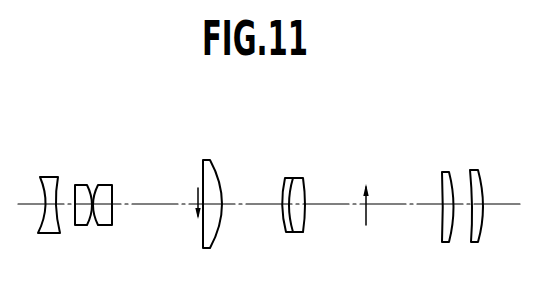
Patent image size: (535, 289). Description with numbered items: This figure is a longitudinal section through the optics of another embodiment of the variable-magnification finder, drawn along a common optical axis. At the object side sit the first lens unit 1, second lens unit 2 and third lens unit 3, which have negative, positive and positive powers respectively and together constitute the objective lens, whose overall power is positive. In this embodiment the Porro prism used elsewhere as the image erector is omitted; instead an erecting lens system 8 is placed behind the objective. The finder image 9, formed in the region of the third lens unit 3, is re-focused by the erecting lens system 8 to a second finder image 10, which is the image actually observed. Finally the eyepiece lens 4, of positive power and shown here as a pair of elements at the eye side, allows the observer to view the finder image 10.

The first lens unit 1 is at (27, 149).
The second lens unit 2 is at (115, 149).
The third lens unit 3 is at (193, 149).
The eyepiece lens 4 is at (493, 155).
The erecting lens system 8 is at (297, 232).
The finder image 9 is at (198, 218).
The finder image 10 is at (367, 210).